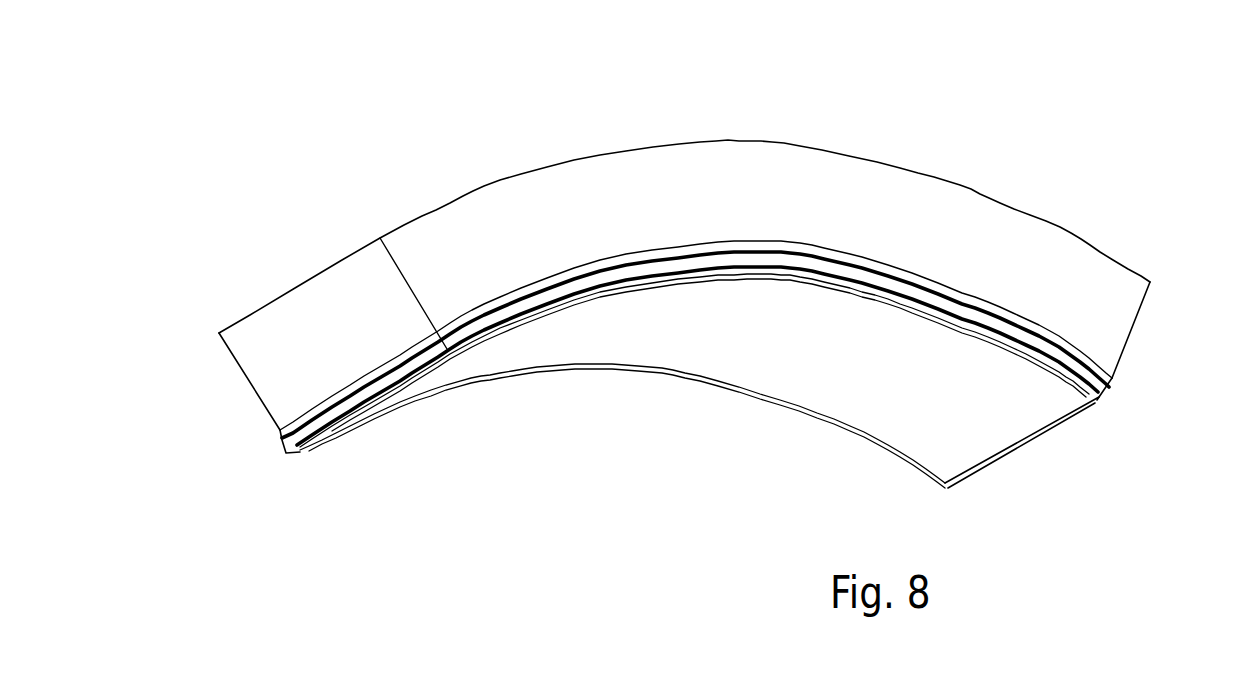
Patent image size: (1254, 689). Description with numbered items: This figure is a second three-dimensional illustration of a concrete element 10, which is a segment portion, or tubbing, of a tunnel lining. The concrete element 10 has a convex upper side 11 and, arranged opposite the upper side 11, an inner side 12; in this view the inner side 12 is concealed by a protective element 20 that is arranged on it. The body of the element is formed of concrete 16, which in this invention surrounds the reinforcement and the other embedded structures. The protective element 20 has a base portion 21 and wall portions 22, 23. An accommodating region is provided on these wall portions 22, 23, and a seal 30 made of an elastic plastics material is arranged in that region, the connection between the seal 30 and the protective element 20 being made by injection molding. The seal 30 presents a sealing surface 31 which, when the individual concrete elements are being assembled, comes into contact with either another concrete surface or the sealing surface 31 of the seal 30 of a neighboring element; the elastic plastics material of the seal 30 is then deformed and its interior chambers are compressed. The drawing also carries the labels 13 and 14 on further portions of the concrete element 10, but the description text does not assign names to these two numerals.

The concrete element 10 is at (1096, 78).
The upper side 11 is at (744, 140).
The inner side 12 is at (598, 335).
The first end portion of first pane 13 is at (297, 357).
The second end portion of first pane 14 is at (1075, 288).
The concrete 16 is at (525, 250).
The protective element 20 is at (910, 400).
The base portion 21 is at (697, 350).
The wall portion 22 is at (293, 431).
The wall portion 23 is at (835, 258).
The seal 30 is at (640, 272).
The sealing surface 31 is at (1110, 388).